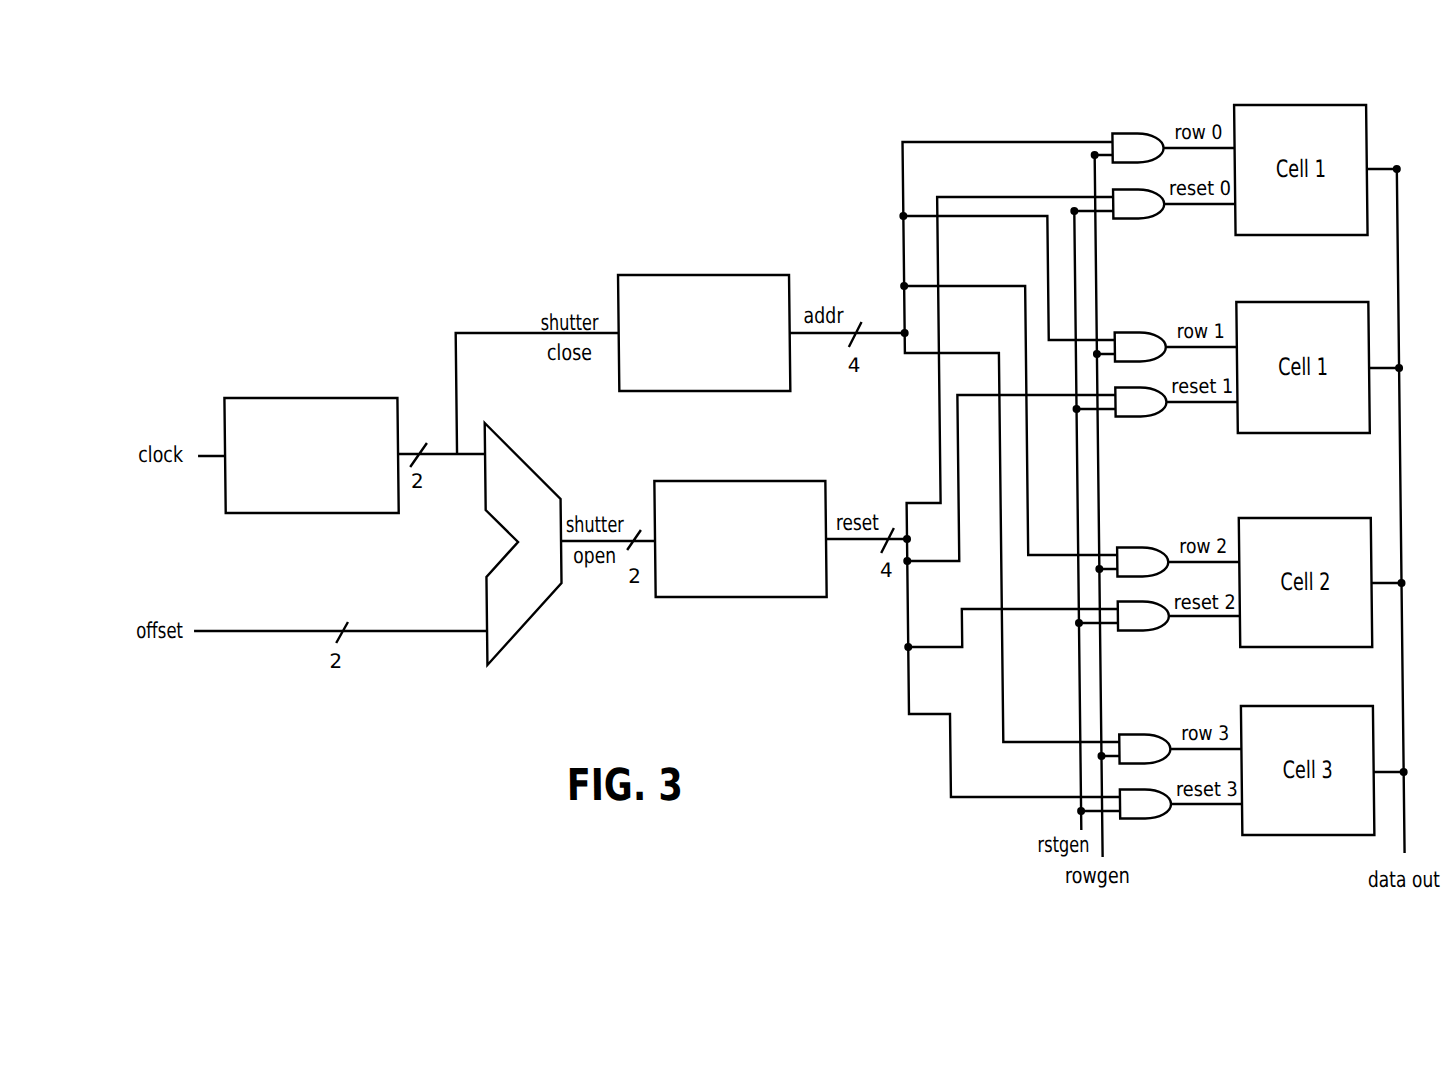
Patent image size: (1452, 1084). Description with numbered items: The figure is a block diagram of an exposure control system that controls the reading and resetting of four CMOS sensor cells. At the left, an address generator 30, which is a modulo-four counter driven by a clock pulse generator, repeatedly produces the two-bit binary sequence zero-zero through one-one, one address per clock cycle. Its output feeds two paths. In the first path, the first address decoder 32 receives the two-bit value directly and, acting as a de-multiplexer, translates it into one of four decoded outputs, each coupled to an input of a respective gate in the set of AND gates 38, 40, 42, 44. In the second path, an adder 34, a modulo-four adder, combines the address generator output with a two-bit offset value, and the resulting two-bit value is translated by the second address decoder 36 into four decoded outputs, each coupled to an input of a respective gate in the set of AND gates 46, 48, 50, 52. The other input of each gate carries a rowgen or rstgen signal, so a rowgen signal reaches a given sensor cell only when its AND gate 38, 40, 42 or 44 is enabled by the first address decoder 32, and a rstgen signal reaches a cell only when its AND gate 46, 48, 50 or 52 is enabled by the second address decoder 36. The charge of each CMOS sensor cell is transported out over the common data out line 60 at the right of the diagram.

The address generator 30 is at (338, 513).
The first address decoder 32 is at (728, 391).
The adder 34 is at (525, 625).
The second address decoder 36 is at (733, 597).
The AND gate 38 is at (1134, 134).
The AND gate 40 is at (1136, 332).
The AND gate 42 is at (1136, 547).
The AND gate 44 is at (1137, 735).
The AND gate 46 is at (1130, 218).
The AND gate 48 is at (1130, 417).
The AND gate 50 is at (1130, 631).
The AND gate 52 is at (1130, 818).
The data out line 60 is at (1400, 483).